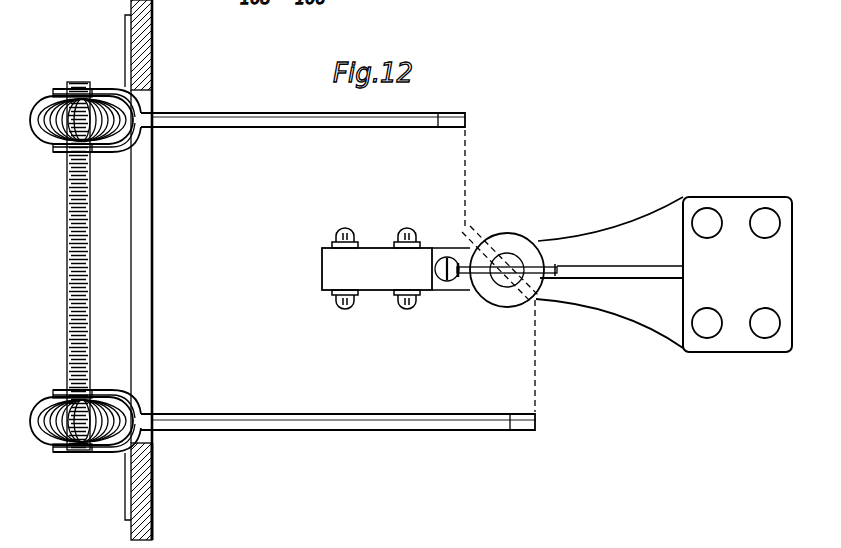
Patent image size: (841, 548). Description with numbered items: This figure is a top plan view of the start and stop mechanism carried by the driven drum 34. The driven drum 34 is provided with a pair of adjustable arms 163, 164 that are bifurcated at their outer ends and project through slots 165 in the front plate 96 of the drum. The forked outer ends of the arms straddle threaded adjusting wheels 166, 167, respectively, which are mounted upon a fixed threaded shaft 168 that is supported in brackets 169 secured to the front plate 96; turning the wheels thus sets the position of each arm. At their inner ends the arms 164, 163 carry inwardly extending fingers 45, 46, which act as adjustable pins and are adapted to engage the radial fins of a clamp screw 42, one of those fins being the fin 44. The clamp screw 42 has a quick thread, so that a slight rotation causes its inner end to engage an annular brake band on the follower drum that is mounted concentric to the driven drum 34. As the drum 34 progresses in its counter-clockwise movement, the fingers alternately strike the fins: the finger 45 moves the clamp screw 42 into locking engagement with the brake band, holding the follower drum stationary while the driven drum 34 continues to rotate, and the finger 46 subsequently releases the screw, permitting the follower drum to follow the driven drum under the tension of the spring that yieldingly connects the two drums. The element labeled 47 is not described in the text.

The driven drum 34 is at (189, 498).
The clamp screw 42 is at (503, 274).
The radial fin 44 is at (545, 262).
The finger 45 is at (536, 413).
The finger 46 is at (441, 116).
The forked arm with mounting plate 47 is at (625, 231).
The front plate 96 is at (129, 532).
The adjustable arm 163 is at (274, 117).
The adjustable arm 164 is at (300, 430).
The slot 165 is at (148, 239).
The threaded adjusting wheel 166 is at (139, 136).
The threaded adjusting wheel 167 is at (120, 413).
The threaded shaft 168 is at (67, 302).
The bracket 169 is at (125, 53).